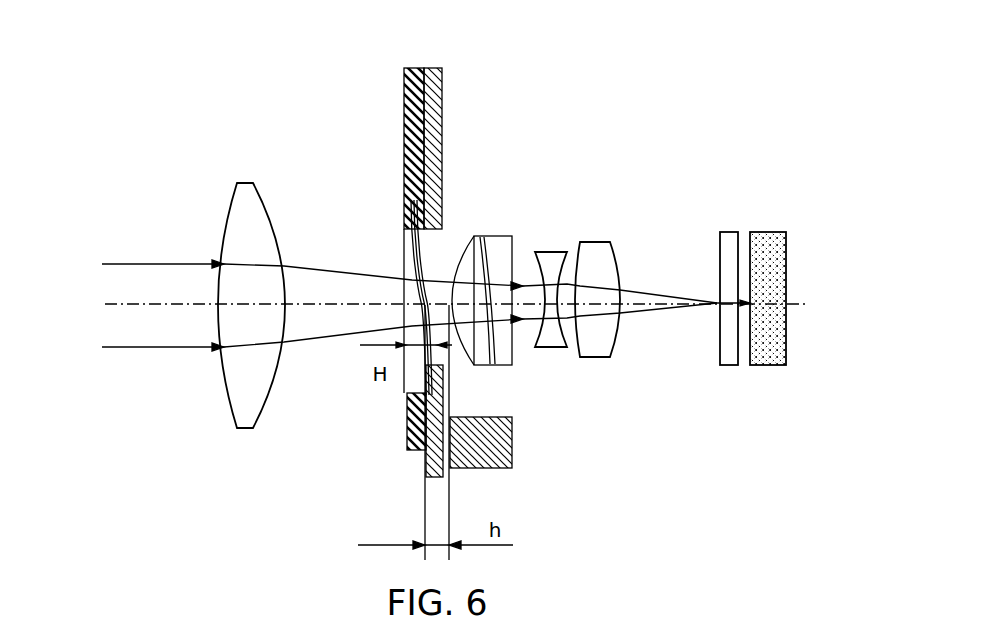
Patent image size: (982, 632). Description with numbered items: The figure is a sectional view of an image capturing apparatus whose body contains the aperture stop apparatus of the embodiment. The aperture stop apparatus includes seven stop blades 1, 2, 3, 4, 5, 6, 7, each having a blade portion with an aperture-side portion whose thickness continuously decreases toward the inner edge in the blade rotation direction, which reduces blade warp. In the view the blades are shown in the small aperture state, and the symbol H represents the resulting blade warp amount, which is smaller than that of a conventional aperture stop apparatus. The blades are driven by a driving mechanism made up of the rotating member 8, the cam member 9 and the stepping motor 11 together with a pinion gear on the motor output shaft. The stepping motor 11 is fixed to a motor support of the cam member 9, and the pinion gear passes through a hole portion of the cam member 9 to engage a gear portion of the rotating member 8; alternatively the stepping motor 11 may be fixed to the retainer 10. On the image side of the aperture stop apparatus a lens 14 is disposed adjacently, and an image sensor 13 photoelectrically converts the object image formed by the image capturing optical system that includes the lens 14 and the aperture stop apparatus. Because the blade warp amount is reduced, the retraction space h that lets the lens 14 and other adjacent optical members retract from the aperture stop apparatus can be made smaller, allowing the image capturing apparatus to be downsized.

The stop blade 1 is at (498, 238).
The stop blade 2 is at (498, 238).
The stop blade 3 is at (498, 238).
The stop blade 4 is at (498, 238).
The stop blade 5 is at (498, 238).
The stop blade 6 is at (498, 238).
The stop blade 7 is at (428, 283).
The rotating member 8 is at (413, 68).
The cam member 9 is at (445, 68).
The retainer 10 is at (395, 228).
The stepping motor 11 is at (512, 438).
The image sensor 13 is at (772, 245).
The lens 14 is at (468, 308).